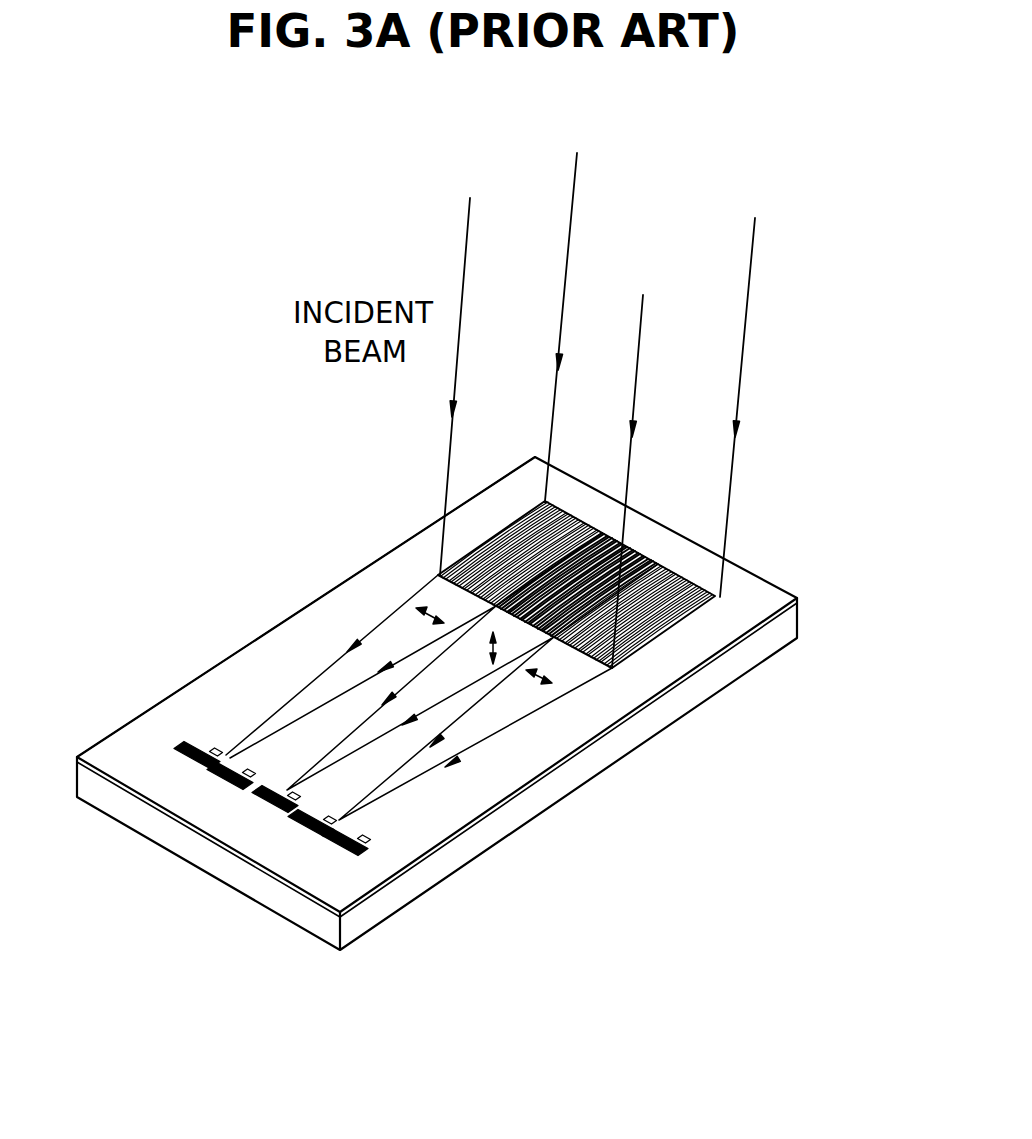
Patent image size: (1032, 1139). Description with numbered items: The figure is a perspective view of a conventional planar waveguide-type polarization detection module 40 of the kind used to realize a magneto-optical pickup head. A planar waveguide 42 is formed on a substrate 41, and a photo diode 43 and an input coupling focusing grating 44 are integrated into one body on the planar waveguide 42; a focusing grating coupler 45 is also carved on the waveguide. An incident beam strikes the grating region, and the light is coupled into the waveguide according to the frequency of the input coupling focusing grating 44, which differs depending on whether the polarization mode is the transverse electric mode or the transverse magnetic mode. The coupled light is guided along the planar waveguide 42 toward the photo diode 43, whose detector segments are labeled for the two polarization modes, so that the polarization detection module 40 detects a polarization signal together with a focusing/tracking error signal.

The polarization detection module 40 is at (832, 505).
The substrate 41 is at (527, 812).
The planar waveguide 42 is at (578, 750).
The photo diode 43 is at (407, 930).
The input coupling focusing grating 44 is at (569, 608).
The focusing grating coupler 45 is at (470, 547).